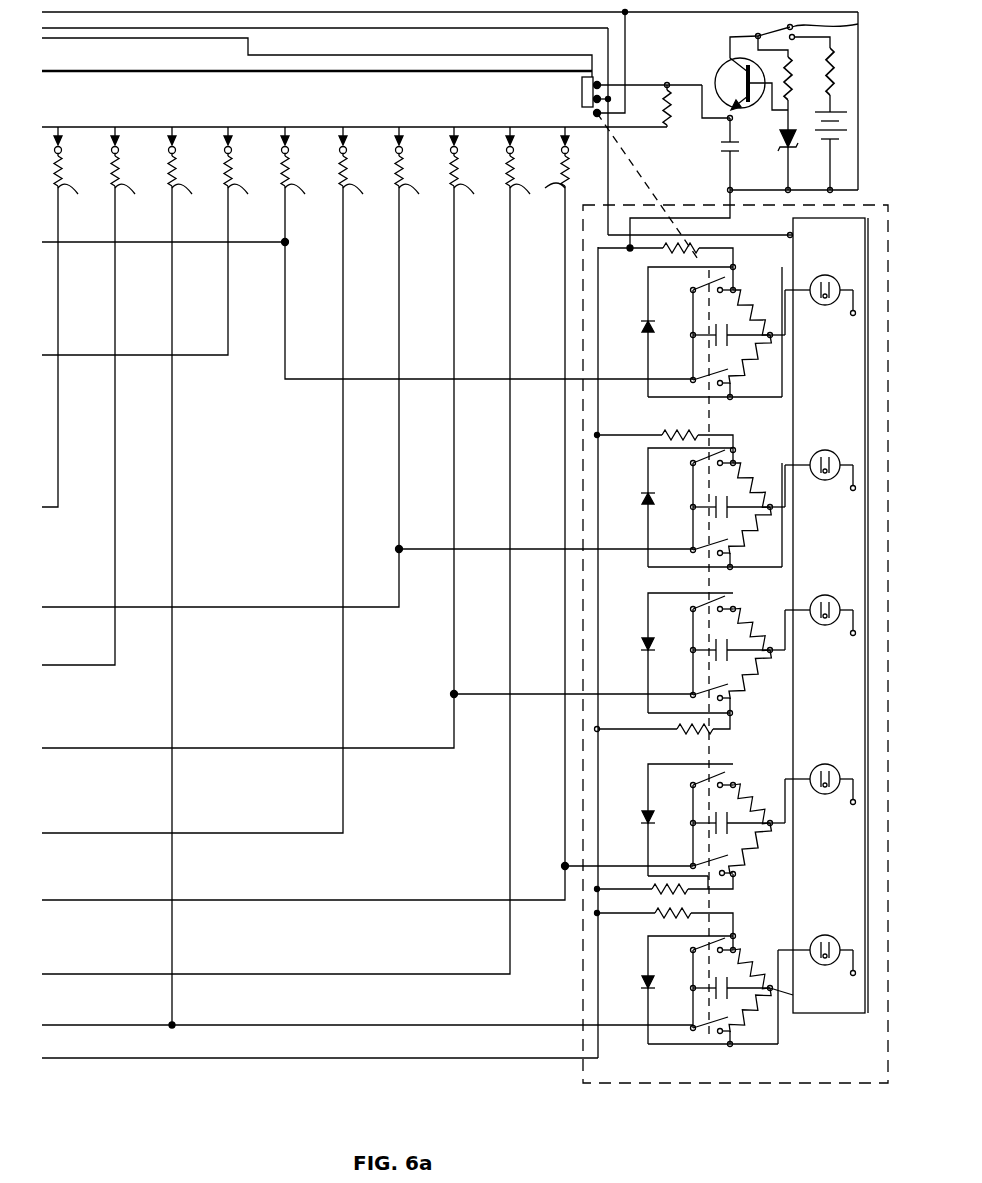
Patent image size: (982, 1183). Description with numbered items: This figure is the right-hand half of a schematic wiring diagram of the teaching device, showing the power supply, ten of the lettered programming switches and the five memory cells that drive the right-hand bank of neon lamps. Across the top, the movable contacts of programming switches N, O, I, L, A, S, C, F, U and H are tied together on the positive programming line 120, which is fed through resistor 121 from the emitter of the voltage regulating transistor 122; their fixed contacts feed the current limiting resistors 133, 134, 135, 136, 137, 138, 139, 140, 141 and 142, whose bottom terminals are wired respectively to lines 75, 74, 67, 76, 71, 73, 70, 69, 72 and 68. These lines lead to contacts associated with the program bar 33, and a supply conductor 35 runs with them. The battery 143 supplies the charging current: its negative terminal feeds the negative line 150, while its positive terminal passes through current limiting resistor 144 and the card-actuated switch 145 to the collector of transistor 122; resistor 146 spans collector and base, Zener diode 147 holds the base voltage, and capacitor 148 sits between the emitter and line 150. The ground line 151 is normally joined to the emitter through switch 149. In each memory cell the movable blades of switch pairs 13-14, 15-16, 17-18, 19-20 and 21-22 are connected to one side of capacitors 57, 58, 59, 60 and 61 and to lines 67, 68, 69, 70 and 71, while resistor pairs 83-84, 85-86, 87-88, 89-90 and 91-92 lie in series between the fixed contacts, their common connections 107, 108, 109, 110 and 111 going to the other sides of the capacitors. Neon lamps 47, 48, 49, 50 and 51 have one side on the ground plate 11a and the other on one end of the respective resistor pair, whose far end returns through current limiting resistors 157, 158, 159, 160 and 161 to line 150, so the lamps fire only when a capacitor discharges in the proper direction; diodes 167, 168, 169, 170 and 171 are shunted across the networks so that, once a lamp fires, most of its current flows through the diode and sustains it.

The ground plate 11a is at (836, 711).
The switch 13 is at (706, 1032).
The switch 14 is at (692, 951).
The switch 15 is at (692, 867).
The switch 16 is at (692, 785).
The switch 17 is at (692, 696).
The switch 18 is at (692, 609).
The switch 19 is at (692, 552).
The switch 20 is at (692, 464).
The switch 21 is at (692, 378).
The switch 22 is at (692, 289).
The program bar 33 is at (108, 63).
The supply conductor 35 is at (450, 71).
The neon lamp 47 is at (830, 936).
The neon lamp 48 is at (831, 768).
The neon lamp 49 is at (822, 594).
The neon lamp 50 is at (836, 436).
The neon lamp 51 is at (826, 275).
The capacitor 57 is at (708, 994).
The capacitor 58 is at (706, 830).
The capacitor 59 is at (706, 644).
The capacitor 60 is at (710, 502).
The capacitor 61 is at (702, 328).
The line 67 is at (172, 478).
The line 68 is at (560, 474).
The line 69 is at (454, 478).
The line 70 is at (399, 478).
The line 71 is at (285, 327).
The line 72 is at (510, 518).
The line 73 is at (343, 478).
The line 74 is at (115, 434).
The line 75 is at (58, 434).
The line 76 is at (228, 316).
The resistor 83 is at (752, 1020).
The resistor 84 is at (752, 971).
The resistor 85 is at (766, 858).
The resistor 86 is at (752, 788).
The resistor 87 is at (762, 688).
The resistor 88 is at (760, 598).
The resistor 89 is at (772, 526).
The resistor 90 is at (752, 473).
The resistor 91 is at (760, 378).
The resistor 92 is at (752, 301).
The common connection 107 is at (803, 991).
The common connection 108 is at (772, 838).
The common connection 109 is at (772, 660).
The common connection 110 is at (785, 509).
The common connection 111 is at (785, 337).
The programming line 120 is at (310, 124).
The resistor 121 is at (646, 96).
The voltage regulating transistor 122 is at (724, 70).
The current limiting resistor 133 is at (79, 175).
The current limiting resistor 134 is at (136, 175).
The current limiting resistor 135 is at (193, 175).
The current limiting resistor 136 is at (249, 175).
The current limiting resistor 137 is at (306, 175).
The current limiting resistor 138 is at (364, 175).
The current limiting resistor 139 is at (420, 175).
The current limiting resistor 140 is at (475, 175).
The current limiting resistor 141 is at (531, 175).
The current limiting resistor 142 is at (545, 158).
The battery 143 is at (840, 125).
The current limiting resistor 144 is at (838, 89).
The switch 145 is at (831, 23).
The resistor 146 is at (790, 66).
The Zener diode 147 is at (782, 153).
The capacitor 148 is at (721, 144).
The switch 149 is at (580, 90).
The negative line 150 is at (324, 13).
The ground line 151 is at (396, 28).
The current limiting resistor 157 is at (658, 916).
The current limiting resistor 158 is at (615, 891).
The current limiting resistor 159 is at (694, 729).
The current limiting resistor 160 is at (687, 430).
The current limiting resistor 161 is at (660, 252).
The diode 167 is at (644, 983).
The diode 168 is at (642, 815).
The diode 169 is at (642, 648).
The diode 170 is at (644, 495).
The diode 171 is at (644, 333).